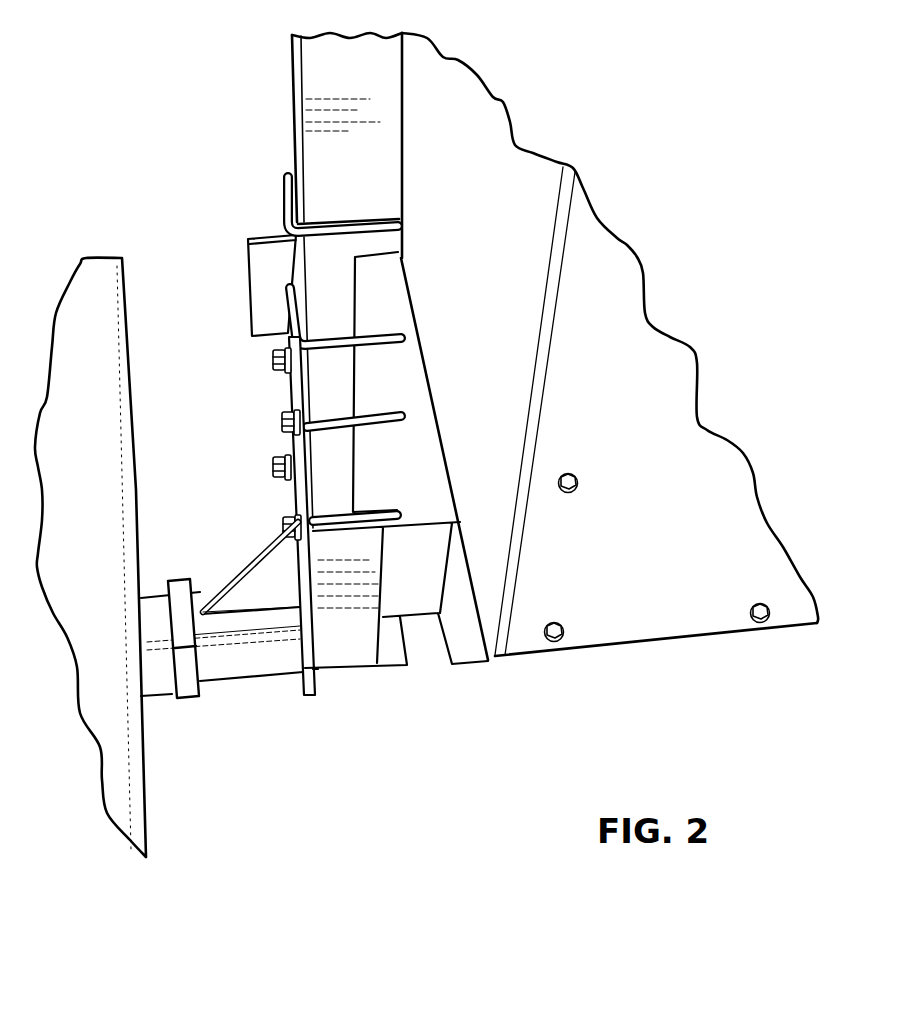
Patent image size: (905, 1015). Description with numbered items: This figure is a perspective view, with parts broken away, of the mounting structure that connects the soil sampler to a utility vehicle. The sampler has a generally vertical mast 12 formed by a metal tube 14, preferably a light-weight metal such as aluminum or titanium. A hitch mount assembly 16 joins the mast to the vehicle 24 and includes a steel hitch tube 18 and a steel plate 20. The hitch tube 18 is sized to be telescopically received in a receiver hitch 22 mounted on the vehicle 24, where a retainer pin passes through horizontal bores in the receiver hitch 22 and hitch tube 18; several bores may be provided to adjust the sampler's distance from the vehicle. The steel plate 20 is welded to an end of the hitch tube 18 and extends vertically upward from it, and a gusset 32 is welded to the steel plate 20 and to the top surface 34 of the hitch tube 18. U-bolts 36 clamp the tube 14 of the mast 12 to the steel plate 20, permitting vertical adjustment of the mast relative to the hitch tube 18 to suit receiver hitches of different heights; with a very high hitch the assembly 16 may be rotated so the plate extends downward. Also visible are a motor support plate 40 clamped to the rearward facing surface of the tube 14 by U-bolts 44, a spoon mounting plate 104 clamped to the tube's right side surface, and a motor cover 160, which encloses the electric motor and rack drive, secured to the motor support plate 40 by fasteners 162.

The vertical mast 12 is at (297, 127).
The metal tube 14 is at (368, 663).
The hitch mount assembly 16 is at (249, 735).
The hitch tube 18 is at (253, 665).
The steel plate 20 is at (290, 397).
The receiver hitch 22 is at (175, 625).
The vehicle 24 is at (95, 263).
The gusset 32 is at (277, 573).
The top surface 34 is at (212, 635).
The U-bolts 36 is at (282, 422).
The motor support plate 40 is at (537, 172).
The U-bolts 44 is at (288, 203).
The spoon mounting plate 104 is at (250, 290).
The motor cover 160 is at (637, 626).
The fasteners 162 is at (578, 490).